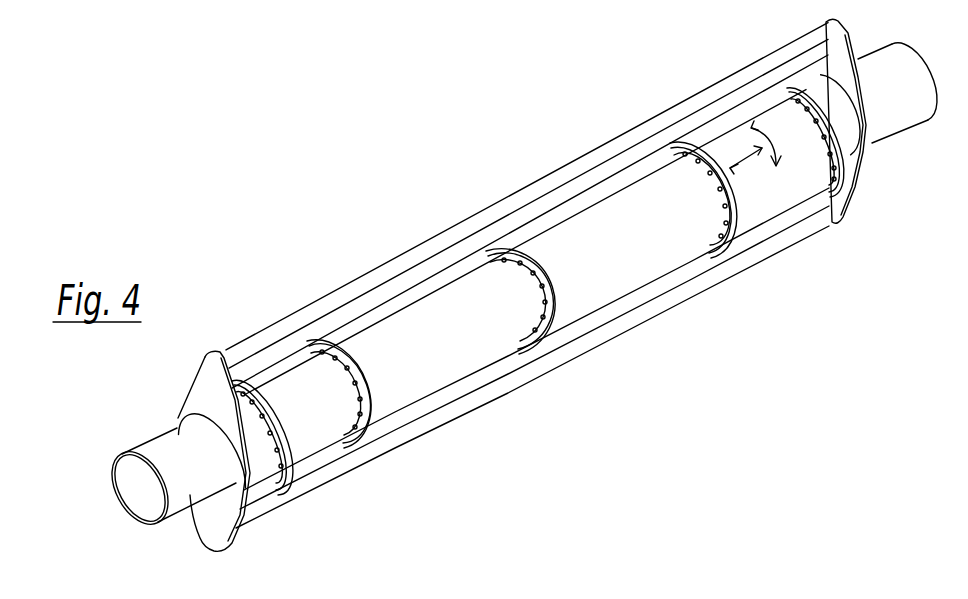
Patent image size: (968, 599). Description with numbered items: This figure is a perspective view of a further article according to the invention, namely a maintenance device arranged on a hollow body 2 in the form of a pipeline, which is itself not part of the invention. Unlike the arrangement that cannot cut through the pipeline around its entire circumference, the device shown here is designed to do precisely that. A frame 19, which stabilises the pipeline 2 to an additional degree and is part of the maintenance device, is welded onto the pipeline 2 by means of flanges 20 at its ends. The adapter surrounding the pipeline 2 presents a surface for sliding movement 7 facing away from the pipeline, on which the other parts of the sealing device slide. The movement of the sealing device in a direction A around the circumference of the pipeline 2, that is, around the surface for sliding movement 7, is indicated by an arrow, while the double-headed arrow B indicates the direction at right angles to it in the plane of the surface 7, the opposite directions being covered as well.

The hollow body 2 is at (163, 448).
The surface for sliding movement 7 is at (317, 380).
The frame 19 is at (285, 338).
The flanges 20 is at (208, 383).